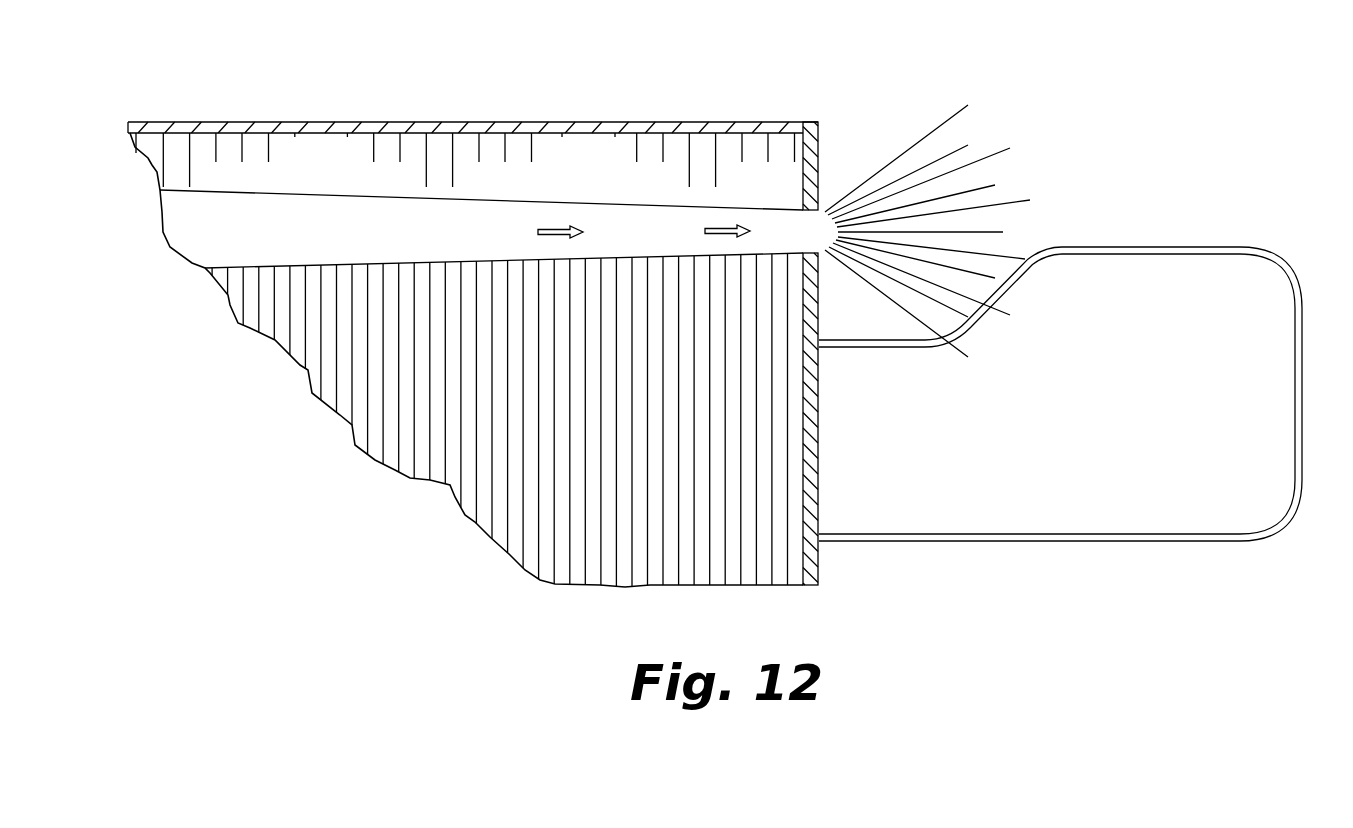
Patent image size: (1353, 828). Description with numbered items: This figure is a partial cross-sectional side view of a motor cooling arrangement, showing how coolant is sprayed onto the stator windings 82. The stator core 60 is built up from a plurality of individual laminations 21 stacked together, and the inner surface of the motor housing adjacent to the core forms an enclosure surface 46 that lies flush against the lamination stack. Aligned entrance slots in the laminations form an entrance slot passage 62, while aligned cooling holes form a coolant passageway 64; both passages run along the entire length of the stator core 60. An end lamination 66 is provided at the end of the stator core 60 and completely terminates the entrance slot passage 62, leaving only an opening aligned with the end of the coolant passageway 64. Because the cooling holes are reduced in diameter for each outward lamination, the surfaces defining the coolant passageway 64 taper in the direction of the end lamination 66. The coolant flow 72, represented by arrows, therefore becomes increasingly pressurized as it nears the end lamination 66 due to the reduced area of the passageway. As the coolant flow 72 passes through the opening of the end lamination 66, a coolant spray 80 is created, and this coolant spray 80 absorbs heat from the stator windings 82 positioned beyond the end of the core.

The lamination 21 is at (778, 542).
The enclosure surface 46 is at (455, 122).
The stator core 60 is at (343, 467).
The entrance slot passage 62 is at (592, 165).
The coolant passageway 64 is at (343, 230).
The end lamination 66 is at (818, 397).
The coolant flow 72 is at (722, 213).
The coolant spray 80 is at (892, 157).
The stator windings 82 is at (1160, 246).